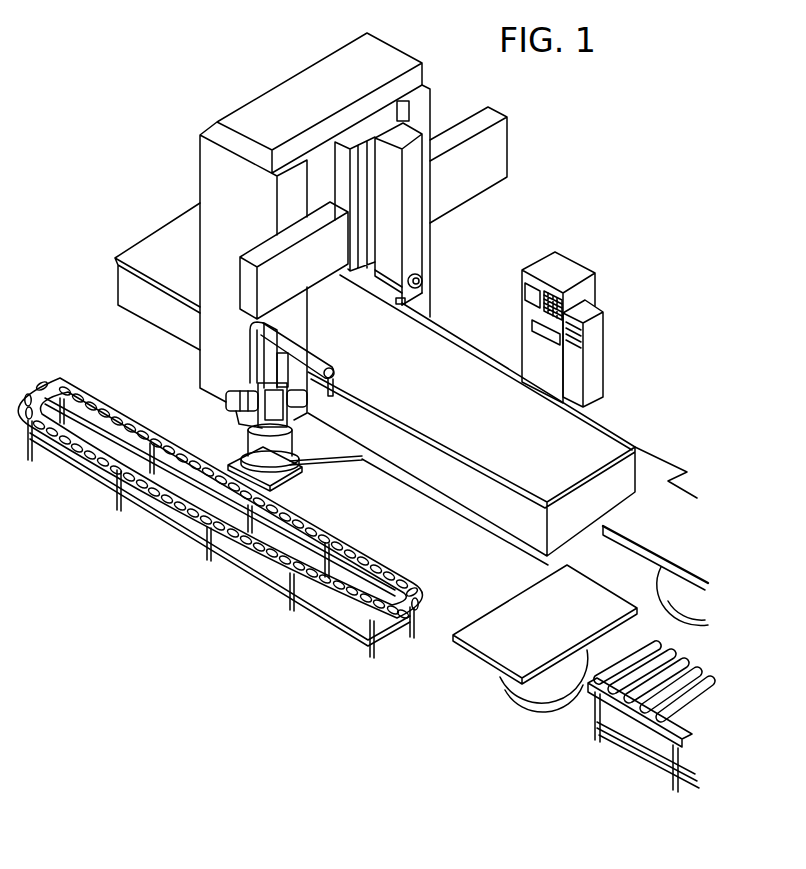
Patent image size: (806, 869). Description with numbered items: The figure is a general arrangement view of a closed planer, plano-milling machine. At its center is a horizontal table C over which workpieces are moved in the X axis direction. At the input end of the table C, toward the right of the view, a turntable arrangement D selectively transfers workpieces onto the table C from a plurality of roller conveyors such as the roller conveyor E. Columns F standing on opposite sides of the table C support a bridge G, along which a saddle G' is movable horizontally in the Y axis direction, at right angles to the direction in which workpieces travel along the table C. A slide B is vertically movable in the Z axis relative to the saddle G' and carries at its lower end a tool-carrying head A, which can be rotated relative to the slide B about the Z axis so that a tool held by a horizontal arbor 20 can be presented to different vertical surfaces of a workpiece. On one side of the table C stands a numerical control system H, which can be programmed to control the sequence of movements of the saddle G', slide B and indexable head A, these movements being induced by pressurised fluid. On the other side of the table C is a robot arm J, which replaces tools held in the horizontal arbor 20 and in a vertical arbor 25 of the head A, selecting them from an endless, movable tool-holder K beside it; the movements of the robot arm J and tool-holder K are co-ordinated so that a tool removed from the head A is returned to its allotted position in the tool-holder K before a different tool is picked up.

The columns F is at (210, 247).
The bridge G is at (294, 260).
The saddle G' is at (362, 176).
The slide B is at (420, 250).
The tool-carrying head A is at (388, 285).
The horizontal arbor 20 is at (423, 284).
The vertical arbor 25 is at (405, 304).
The horizontal table C is at (427, 396).
The numerical control system H is at (588, 271).
The robot arm J is at (241, 371).
The tool-holder K is at (193, 518).
The turntable arrangement D is at (613, 583).
The roller conveyor E is at (640, 713).